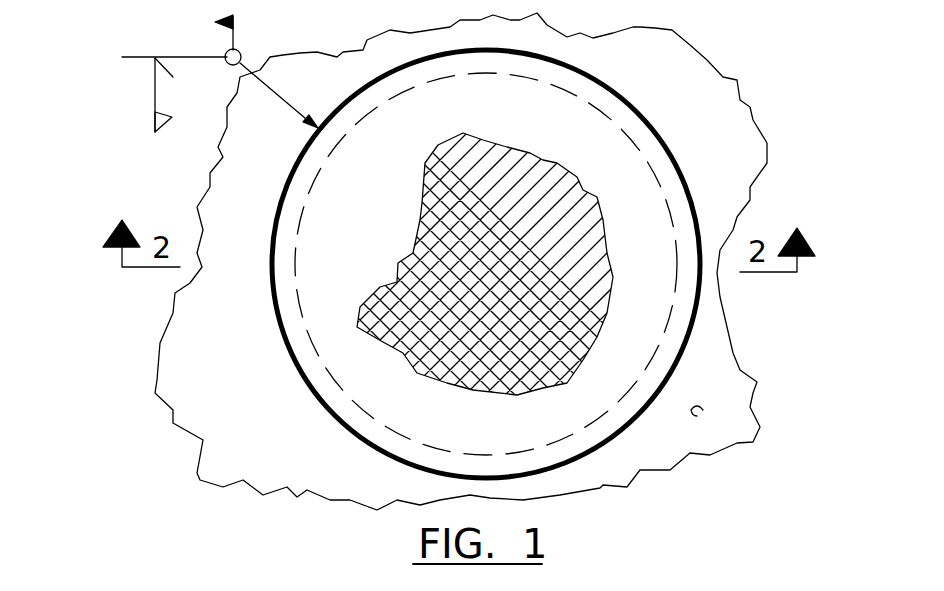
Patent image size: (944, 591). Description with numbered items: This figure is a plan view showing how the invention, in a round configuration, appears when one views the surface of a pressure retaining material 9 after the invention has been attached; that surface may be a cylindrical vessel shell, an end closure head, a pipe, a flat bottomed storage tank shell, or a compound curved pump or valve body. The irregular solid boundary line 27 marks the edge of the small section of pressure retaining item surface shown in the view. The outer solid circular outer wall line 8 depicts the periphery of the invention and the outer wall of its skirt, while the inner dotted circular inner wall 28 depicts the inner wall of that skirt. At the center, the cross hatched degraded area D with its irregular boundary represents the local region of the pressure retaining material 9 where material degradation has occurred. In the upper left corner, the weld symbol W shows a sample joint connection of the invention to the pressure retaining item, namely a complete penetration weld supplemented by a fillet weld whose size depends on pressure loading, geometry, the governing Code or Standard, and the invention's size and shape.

The boundary line 27 is at (752, 103).
The outer wall line 8 is at (690, 342).
The inner wall 28 is at (352, 403).
The degraded area D is at (568, 220).
The pressure retaining material 9 is at (703, 410).
The weld symbol W is at (134, 88).